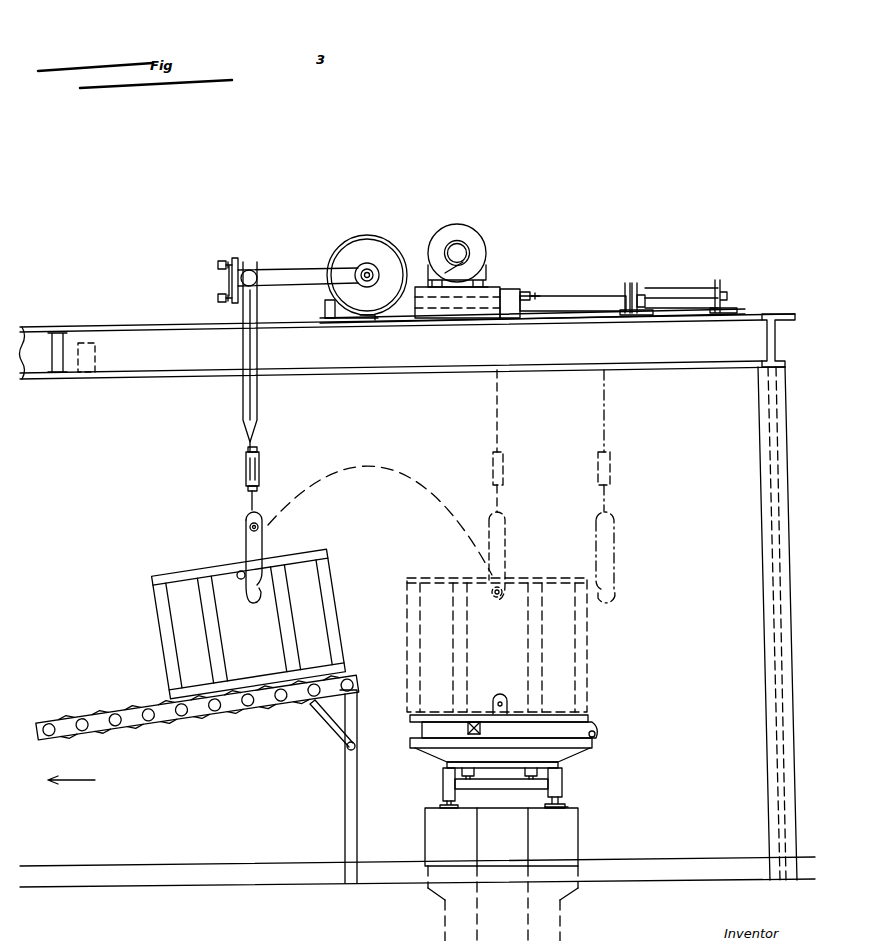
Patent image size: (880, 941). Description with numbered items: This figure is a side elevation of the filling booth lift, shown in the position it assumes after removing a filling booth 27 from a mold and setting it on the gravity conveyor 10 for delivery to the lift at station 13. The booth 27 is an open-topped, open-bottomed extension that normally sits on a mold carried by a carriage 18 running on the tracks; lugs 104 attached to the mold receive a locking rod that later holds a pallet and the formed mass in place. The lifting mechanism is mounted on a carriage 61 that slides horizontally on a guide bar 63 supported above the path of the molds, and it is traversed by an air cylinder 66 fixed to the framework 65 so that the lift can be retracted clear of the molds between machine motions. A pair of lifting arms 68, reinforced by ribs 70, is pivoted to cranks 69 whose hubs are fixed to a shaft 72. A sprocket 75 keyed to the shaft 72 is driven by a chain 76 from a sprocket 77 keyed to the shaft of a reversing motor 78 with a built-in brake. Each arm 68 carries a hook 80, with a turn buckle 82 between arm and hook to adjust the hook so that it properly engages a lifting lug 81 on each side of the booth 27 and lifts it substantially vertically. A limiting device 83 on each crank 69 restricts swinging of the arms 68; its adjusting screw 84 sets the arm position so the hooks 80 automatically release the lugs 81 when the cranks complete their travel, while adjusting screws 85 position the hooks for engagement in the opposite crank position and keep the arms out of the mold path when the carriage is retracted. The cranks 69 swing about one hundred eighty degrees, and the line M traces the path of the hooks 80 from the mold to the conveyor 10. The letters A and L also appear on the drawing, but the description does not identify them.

The gravity conveyor 10 is at (139, 734).
The station 13 is at (148, 778).
The carriage 18 is at (565, 751).
The filling booth 27 is at (390, 616).
The carriage 61 is at (512, 290).
The guide bar 63 is at (566, 297).
The framework 65 is at (666, 348).
The air cylinder 66 is at (684, 290).
The lifting arm 68 is at (256, 408).
The crank 69 is at (273, 270).
The rib 70 is at (258, 358).
The shaft 72 is at (373, 273).
The sprocket 75 is at (371, 238).
The chain 76 is at (445, 248).
The sprocket 77 is at (469, 250).
The motor 78 is at (485, 255).
The hook 80 is at (262, 546).
The lifting lug 81 is at (240, 571).
The turn buckle 82 is at (259, 470).
The limiting device 83 is at (231, 292).
The adjusting screw 84 is at (218, 299).
The adjusting screw 85 is at (222, 262).
The lug 104 is at (501, 698).
The position A is at (555, 805).
The lever L is at (528, 297).
The line M is at (408, 466).